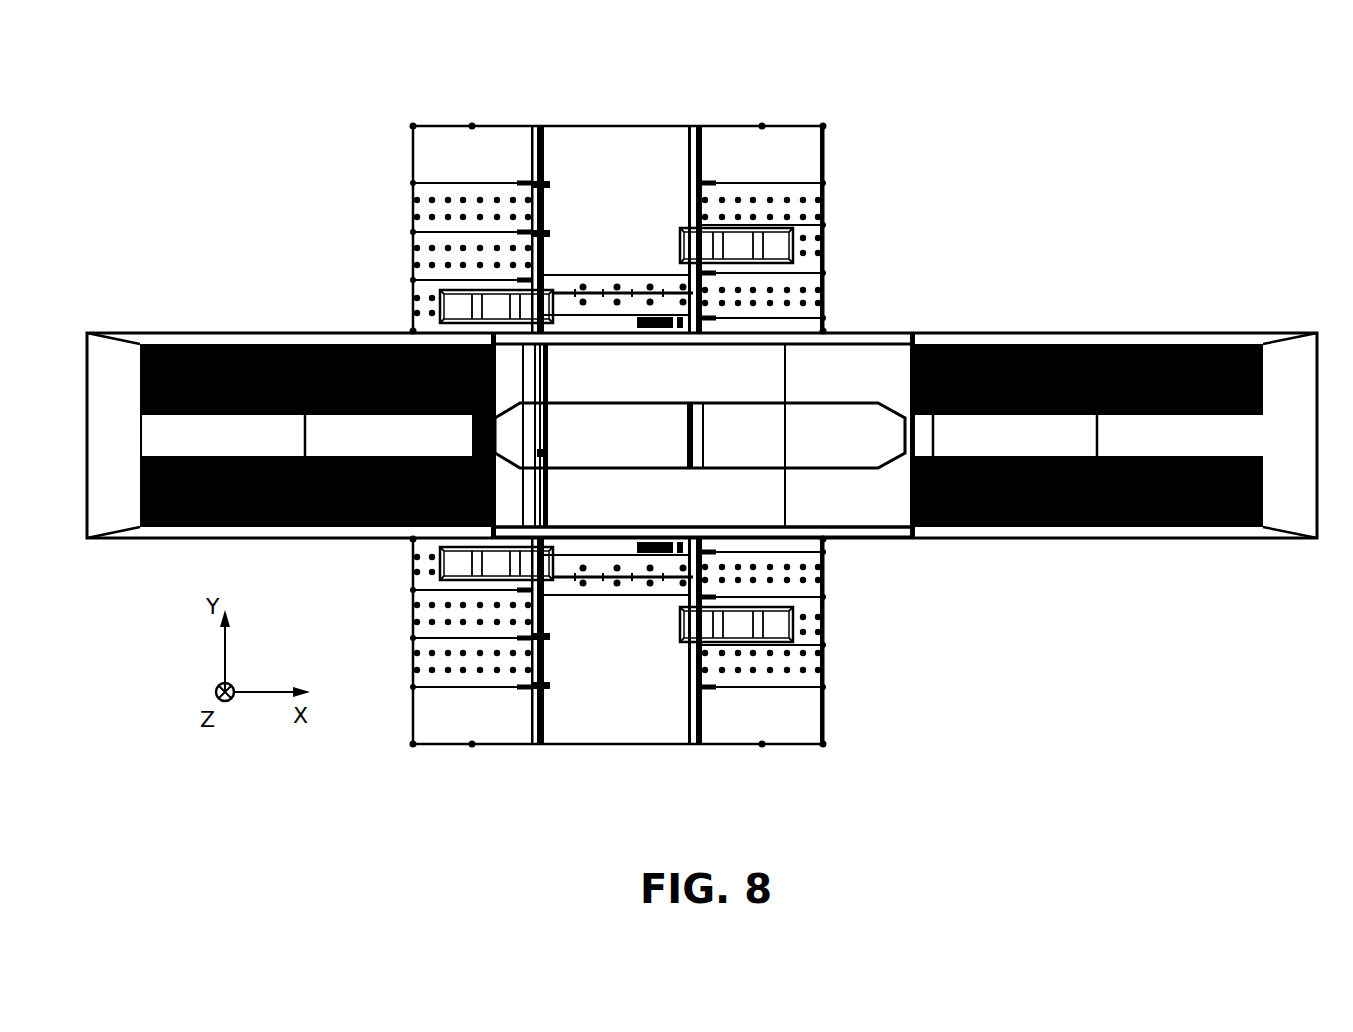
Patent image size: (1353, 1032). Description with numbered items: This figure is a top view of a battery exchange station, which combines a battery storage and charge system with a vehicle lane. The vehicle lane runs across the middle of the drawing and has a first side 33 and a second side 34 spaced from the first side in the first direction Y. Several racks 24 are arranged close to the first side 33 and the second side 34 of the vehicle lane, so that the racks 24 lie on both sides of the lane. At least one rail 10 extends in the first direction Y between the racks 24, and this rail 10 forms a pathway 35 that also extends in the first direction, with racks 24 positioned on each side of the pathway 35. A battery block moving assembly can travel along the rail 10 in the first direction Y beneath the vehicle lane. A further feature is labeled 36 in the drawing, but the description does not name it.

The assembly 36 is at (1238, 242).
The pathway 35 is at (597, 170).
The rack 24 is at (823, 157).
The second side 34 is at (880, 340).
The first side 33 is at (862, 536).
The rail 10 is at (687, 708).